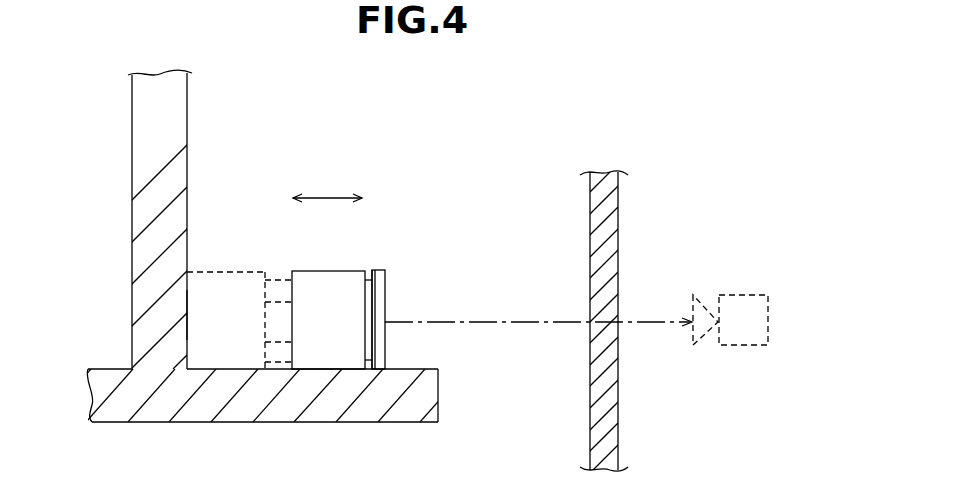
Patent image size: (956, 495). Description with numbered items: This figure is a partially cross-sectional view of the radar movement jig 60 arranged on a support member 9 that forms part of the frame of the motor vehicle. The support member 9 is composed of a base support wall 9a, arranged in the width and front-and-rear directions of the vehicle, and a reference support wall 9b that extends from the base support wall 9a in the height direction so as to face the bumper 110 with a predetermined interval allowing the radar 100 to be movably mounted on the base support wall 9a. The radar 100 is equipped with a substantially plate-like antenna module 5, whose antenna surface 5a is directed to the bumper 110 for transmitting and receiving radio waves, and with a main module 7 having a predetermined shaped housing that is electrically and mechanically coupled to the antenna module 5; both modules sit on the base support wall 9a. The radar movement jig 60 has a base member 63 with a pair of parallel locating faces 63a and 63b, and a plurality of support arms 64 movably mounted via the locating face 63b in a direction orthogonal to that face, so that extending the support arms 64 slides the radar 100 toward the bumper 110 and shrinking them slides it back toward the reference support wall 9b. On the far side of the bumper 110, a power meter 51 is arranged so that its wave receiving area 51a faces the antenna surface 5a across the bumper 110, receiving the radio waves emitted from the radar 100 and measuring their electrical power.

The support member 9 is at (233, 271).
The base support wall 9a is at (323, 410).
The reference support wall 9b is at (140, 205).
The radar movement jig 60 is at (237, 286).
The base member 63 is at (216, 271).
The locating face 63a is at (188, 312).
The locating face 63b is at (273, 274).
The support arms 64 is at (279, 287).
The main module 7 is at (330, 270).
The antenna module 5 is at (406, 293).
The antenna surface 5a is at (386, 296).
The radar 100 is at (369, 281).
The bumper 110 is at (620, 218).
The power meter 51 is at (703, 317).
The wave receiving area 51a is at (691, 330).